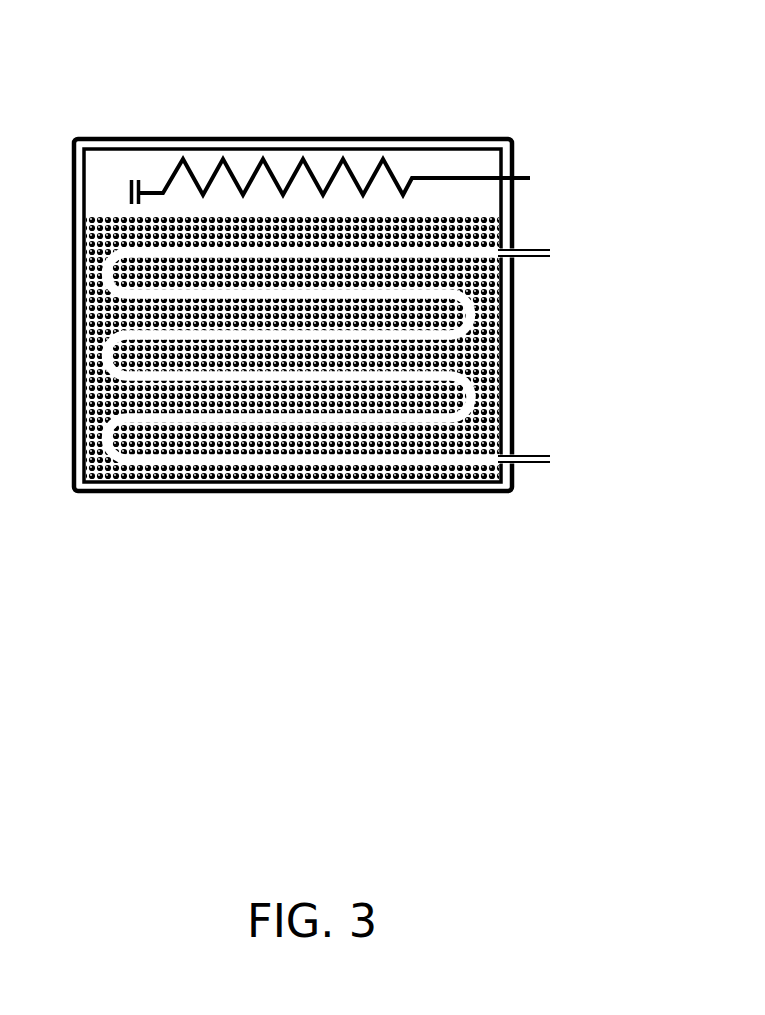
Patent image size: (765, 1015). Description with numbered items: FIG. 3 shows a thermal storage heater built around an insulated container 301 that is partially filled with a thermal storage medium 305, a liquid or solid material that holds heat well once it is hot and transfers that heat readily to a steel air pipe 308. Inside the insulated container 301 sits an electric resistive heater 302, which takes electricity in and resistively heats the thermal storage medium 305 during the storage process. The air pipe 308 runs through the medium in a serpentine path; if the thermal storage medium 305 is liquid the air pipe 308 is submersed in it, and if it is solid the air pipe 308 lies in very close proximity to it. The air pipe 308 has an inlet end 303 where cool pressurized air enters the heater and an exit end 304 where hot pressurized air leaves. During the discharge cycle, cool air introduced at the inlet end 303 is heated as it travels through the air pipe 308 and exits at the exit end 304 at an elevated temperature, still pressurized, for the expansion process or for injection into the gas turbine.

The container 301 is at (513, 138).
The electric resistive heater 302 is at (530, 178).
The inlet end 303 is at (552, 253).
The exit end 304 is at (560, 457).
The thermal storage medium 305 is at (482, 355).
The air pipe 308 is at (223, 462).